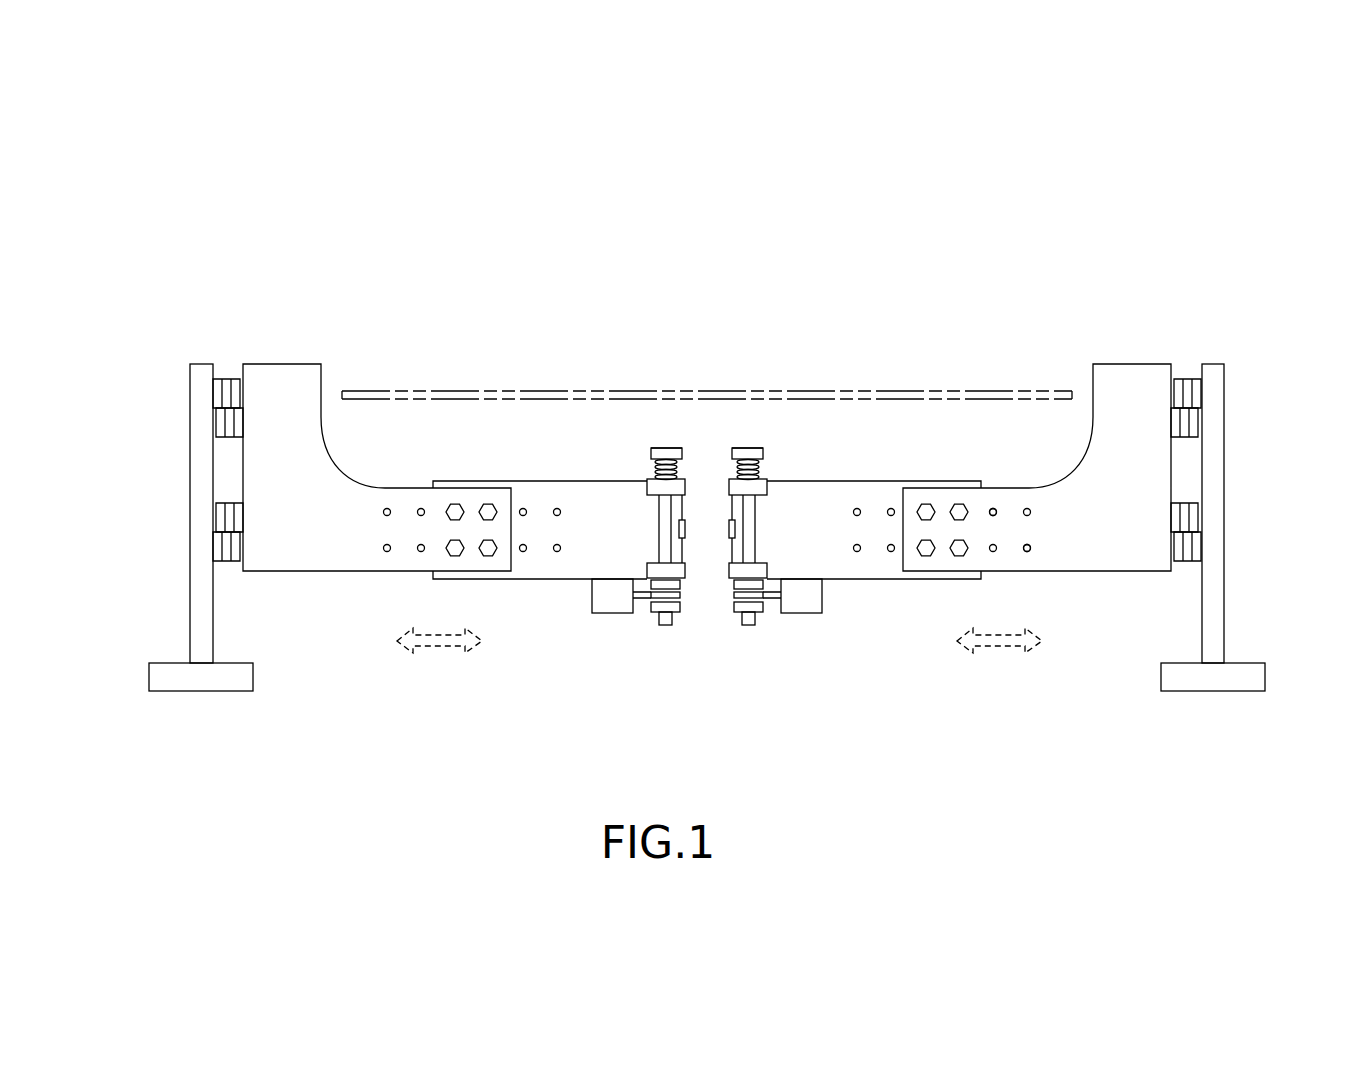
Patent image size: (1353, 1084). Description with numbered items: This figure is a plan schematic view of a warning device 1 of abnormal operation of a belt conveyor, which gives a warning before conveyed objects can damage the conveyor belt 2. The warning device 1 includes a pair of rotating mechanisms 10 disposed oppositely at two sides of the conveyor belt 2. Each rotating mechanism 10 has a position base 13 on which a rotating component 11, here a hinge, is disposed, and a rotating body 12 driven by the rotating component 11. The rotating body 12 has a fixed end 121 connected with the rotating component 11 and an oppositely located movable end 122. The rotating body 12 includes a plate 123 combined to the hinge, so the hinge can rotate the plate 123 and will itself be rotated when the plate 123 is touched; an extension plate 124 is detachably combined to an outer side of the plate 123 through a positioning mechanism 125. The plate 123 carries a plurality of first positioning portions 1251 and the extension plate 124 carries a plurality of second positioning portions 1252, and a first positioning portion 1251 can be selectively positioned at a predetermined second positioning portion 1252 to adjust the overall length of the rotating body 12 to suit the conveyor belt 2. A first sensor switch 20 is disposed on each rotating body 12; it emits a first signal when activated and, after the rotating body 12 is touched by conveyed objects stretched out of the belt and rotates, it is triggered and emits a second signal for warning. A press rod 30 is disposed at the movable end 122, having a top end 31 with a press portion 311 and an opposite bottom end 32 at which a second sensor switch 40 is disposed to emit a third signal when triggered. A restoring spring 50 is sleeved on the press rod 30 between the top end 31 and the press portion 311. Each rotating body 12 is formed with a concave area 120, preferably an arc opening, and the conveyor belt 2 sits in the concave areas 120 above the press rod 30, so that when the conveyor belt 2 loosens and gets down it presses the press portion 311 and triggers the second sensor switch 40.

The warning device 1 is at (698, 187).
The conveyor belt 2 is at (470, 397).
The rotating mechanism 10 is at (1247, 303).
The rotating component 11 is at (1197, 382).
The rotating body 12 is at (1042, 598).
The position base 13 is at (1212, 467).
The concave area 120 is at (1065, 470).
The fixed end 121 is at (1157, 388).
The movable end 122 is at (915, 582).
The plate 123 is at (347, 490).
The extension plate 124 is at (533, 492).
The positioning mechanism 125 is at (848, 325).
The first positioning portion 1251 is at (993, 506).
The second positioning portion 1252 is at (857, 506).
The first sensor switch 20 is at (729, 530).
The press rod 30 is at (665, 527).
The top end 31 is at (654, 432).
The press portion 311 is at (670, 452).
The bottom end 32 is at (663, 638).
The second sensor switch 40 is at (611, 608).
The restoring spring 50 is at (650, 474).